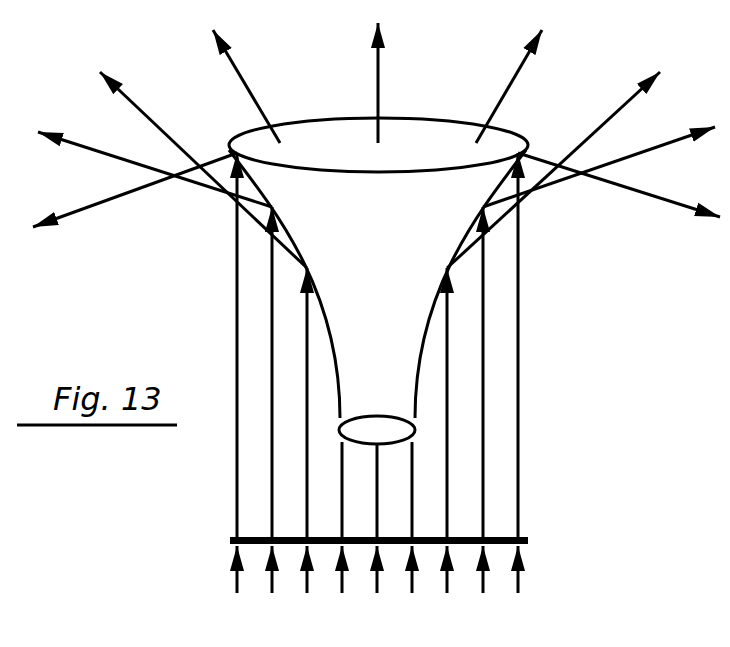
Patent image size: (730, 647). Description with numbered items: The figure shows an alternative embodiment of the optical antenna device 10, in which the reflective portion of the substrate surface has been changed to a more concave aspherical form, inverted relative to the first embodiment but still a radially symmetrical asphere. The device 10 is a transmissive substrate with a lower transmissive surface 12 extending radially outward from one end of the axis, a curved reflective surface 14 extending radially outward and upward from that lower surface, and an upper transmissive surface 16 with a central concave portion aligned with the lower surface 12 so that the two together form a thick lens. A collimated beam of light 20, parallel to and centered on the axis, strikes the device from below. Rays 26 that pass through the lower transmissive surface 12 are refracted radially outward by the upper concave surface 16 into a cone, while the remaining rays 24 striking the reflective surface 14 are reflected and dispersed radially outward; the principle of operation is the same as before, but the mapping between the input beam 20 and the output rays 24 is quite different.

The device 10 is at (408, 254).
The lower transmissive surface 12 is at (375, 431).
The curved reflective surface 14 is at (405, 302).
The upper transmissive surface 16 is at (402, 143).
The beam of light 20 is at (520, 580).
The reflected rays 24 is at (127, 105).
The refracted rays 26 is at (242, 78).